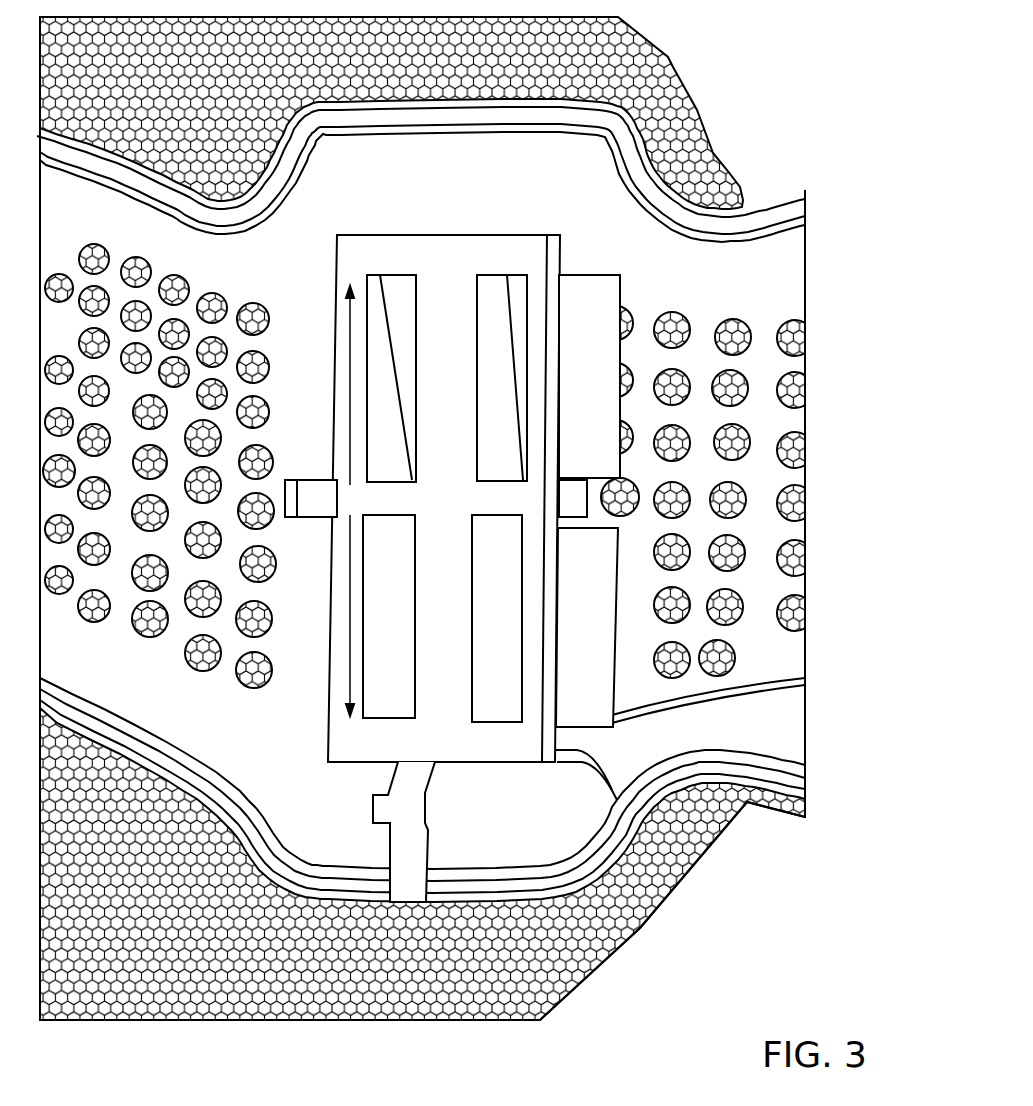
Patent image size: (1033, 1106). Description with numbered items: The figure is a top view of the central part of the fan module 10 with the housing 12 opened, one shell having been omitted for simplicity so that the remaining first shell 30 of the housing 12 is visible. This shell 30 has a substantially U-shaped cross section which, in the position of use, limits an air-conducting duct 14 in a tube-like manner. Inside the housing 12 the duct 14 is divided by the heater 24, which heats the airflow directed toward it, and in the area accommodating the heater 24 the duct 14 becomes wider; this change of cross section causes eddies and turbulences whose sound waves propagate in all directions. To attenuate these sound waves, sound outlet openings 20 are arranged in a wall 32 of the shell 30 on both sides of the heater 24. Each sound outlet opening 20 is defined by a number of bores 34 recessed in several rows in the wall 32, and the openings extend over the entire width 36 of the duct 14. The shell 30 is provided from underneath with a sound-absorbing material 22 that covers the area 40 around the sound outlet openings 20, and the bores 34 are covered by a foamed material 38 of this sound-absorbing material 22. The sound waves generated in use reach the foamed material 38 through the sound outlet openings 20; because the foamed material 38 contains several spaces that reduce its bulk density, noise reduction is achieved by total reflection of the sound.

The fan module 10 is at (704, 86).
The housing 12 is at (441, 82).
The duct 14 is at (227, 271).
The sound outlet opening 20 is at (163, 166).
The sound-absorbing material 22 is at (700, 888).
The heater 24 is at (430, 614).
The shell 30 is at (667, 806).
The wall 32 is at (755, 423).
The bore 34 is at (745, 659).
The width 36 is at (350, 501).
The foamed material 38 is at (190, 555).
The area 40 is at (130, 790).